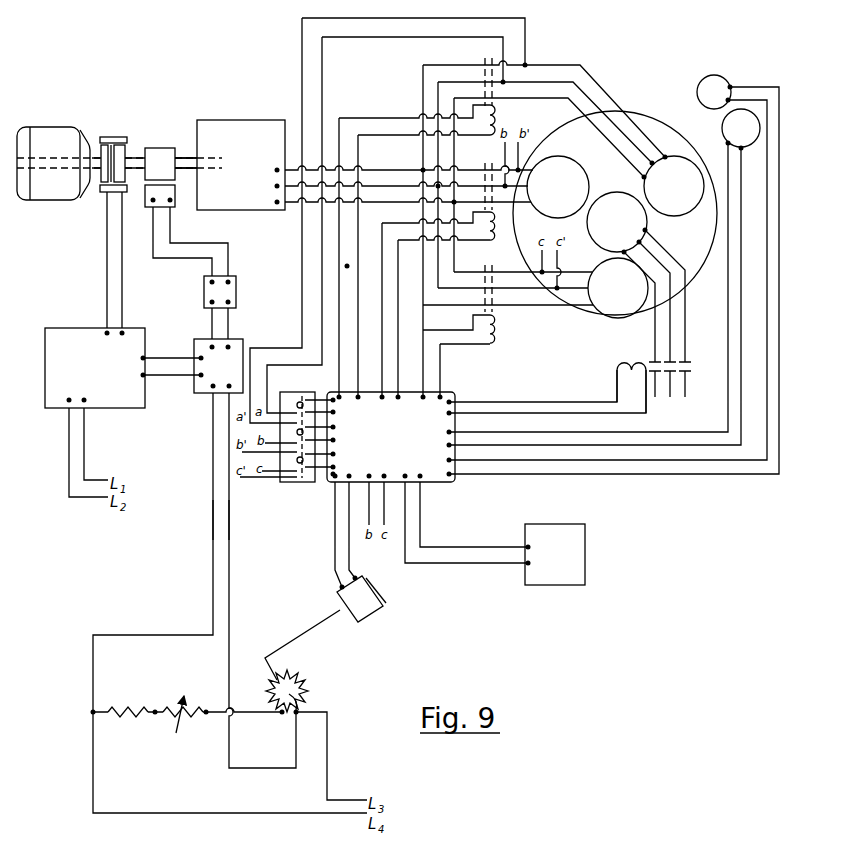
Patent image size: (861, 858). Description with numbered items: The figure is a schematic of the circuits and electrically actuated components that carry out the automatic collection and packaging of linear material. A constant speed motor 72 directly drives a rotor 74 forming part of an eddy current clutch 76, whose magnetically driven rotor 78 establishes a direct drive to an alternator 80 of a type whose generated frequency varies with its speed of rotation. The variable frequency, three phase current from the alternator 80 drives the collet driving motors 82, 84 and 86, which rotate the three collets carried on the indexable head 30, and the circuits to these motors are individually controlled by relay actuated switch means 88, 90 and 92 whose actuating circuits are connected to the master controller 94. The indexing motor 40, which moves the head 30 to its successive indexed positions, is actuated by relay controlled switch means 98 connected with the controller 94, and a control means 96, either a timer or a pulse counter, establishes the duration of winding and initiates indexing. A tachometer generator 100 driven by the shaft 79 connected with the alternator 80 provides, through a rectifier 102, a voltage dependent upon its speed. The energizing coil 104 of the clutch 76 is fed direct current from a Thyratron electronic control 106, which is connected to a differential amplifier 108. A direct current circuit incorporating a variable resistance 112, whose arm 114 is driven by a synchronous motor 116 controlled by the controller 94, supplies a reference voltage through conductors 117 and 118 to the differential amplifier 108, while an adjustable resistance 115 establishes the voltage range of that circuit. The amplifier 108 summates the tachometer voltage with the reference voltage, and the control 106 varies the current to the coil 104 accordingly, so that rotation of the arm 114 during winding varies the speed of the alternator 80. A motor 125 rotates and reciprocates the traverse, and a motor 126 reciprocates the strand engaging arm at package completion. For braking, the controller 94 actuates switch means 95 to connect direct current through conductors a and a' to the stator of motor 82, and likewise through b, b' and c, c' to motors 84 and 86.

The constant speed motor 72 is at (48, 126).
The rotor 74 is at (102, 148).
The eddy current clutch 76 is at (113, 146).
The magnetically driven rotor 78 is at (124, 152).
The shaft 79 is at (190, 157).
The alternator 80 is at (258, 120).
The tachometer generator 100 is at (163, 147).
The energizing coil 104 is at (102, 190).
The rectifier 102 is at (236, 283).
The Thyratron electronic control 106 is at (78, 328).
The differential amplifier 108 is at (243, 341).
The conductor 117 is at (213, 518).
The conductor 118 is at (229, 518).
The switch means 95 is at (308, 482).
The master controller 94 is at (454, 480).
The control means 96 is at (585, 524).
The synchronous motor 116 is at (337, 593).
The variable resistance 112 is at (306, 686).
The arm 114 is at (292, 708).
The adjustable resistance 115 is at (147, 728).
The relay actuated switch means 88 is at (498, 104).
The relay actuated switch means 92 is at (498, 214).
The relay actuated switch means 90 is at (497, 316).
The relay controlled switch means 98 is at (645, 358).
The indexable head 30 is at (662, 122).
The collet driving motor 86 is at (569, 197).
The collet driving motor 82 is at (685, 196).
The indexing motor 40 is at (628, 232).
The collet driving motor 84 is at (629, 298).
The motor 126 is at (707, 76).
The motor 125 is at (722, 123).